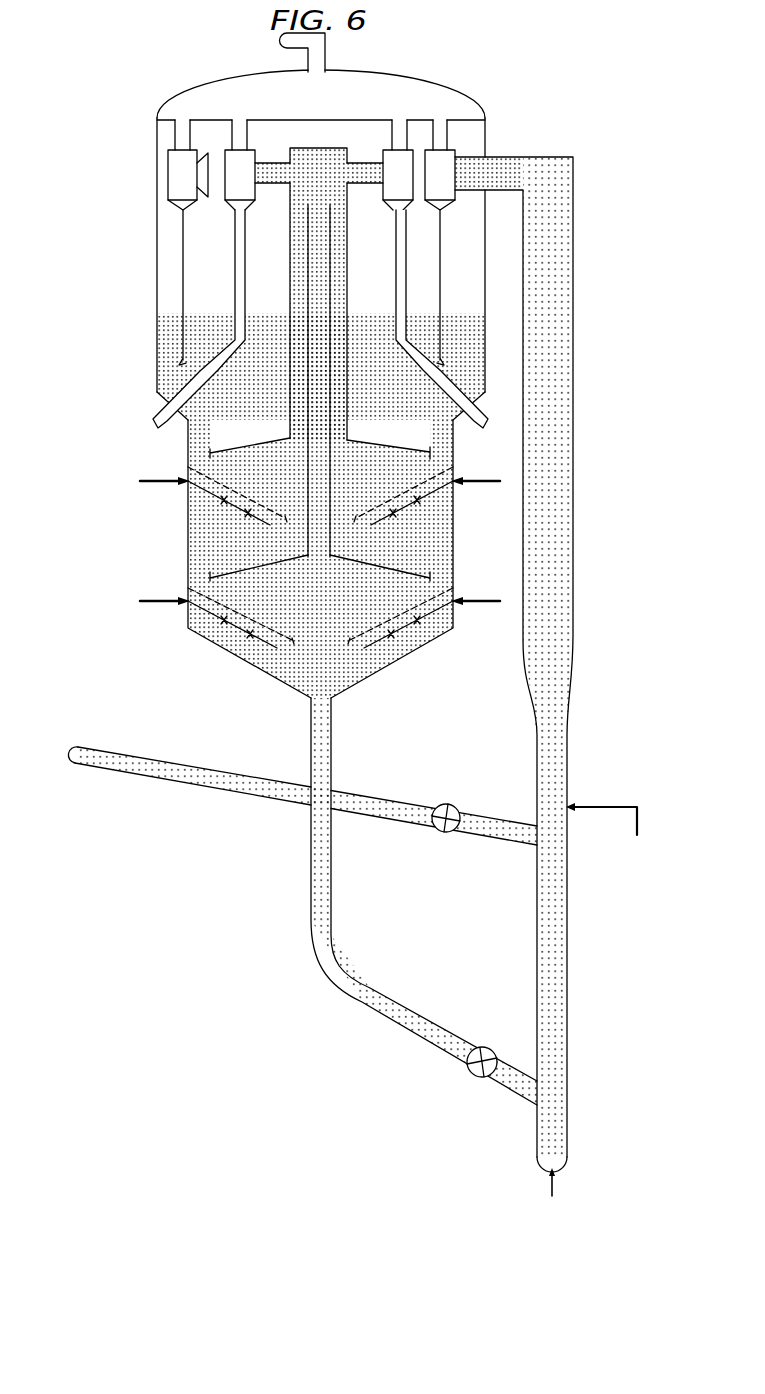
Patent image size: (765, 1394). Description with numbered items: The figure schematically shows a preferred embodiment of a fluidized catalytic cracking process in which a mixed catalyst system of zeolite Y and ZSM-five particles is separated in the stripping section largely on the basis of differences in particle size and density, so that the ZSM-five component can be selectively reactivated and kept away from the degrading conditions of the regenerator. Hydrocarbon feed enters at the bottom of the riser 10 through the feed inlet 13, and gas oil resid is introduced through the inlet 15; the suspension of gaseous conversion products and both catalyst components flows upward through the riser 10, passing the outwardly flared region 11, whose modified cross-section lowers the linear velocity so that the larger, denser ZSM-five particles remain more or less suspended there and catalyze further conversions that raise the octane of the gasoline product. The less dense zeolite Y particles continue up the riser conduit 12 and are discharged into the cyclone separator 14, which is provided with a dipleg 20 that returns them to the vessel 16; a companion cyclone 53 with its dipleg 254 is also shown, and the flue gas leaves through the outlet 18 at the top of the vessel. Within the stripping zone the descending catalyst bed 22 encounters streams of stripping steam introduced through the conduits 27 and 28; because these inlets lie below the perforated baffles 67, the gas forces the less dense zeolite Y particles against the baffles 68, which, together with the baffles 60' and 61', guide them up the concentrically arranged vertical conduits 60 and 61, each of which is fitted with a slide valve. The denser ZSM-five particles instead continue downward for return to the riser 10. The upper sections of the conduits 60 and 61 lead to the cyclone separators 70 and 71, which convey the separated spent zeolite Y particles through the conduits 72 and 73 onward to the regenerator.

The regenerator vessel 16 is at (331, 111).
The flue gas outlet 18 is at (325, 45).
The cyclone separator 53 is at (195, 186).
The cyclone separator 70 is at (251, 186).
The cyclone separator 71 is at (409, 186).
The cyclone separator 14 is at (451, 186).
The cyclone dipleg 254 is at (184, 253).
The dipleg 20 is at (439, 253).
The descending catalyst bed 22 is at (173, 373).
The conduit 72 is at (157, 410).
The conduit 73 is at (498, 408).
The upper baffle 60' is at (291, 428).
The lower baffle 61' is at (290, 364).
The baffles 68 is at (423, 450).
The perforated baffles 67 is at (444, 467).
The conduit 27 is at (157, 492).
The conduit 28 is at (157, 612).
The riser reactor conduit 12 is at (574, 443).
The riser 10 is at (568, 930).
The outwardly flared region 11 is at (568, 1066).
The feed inlet 13 is at (553, 1193).
The gas oil resid inlet 15 is at (607, 806).
The vertical conduit 60 is at (302, 786).
The vertical conduit 61 is at (449, 799).